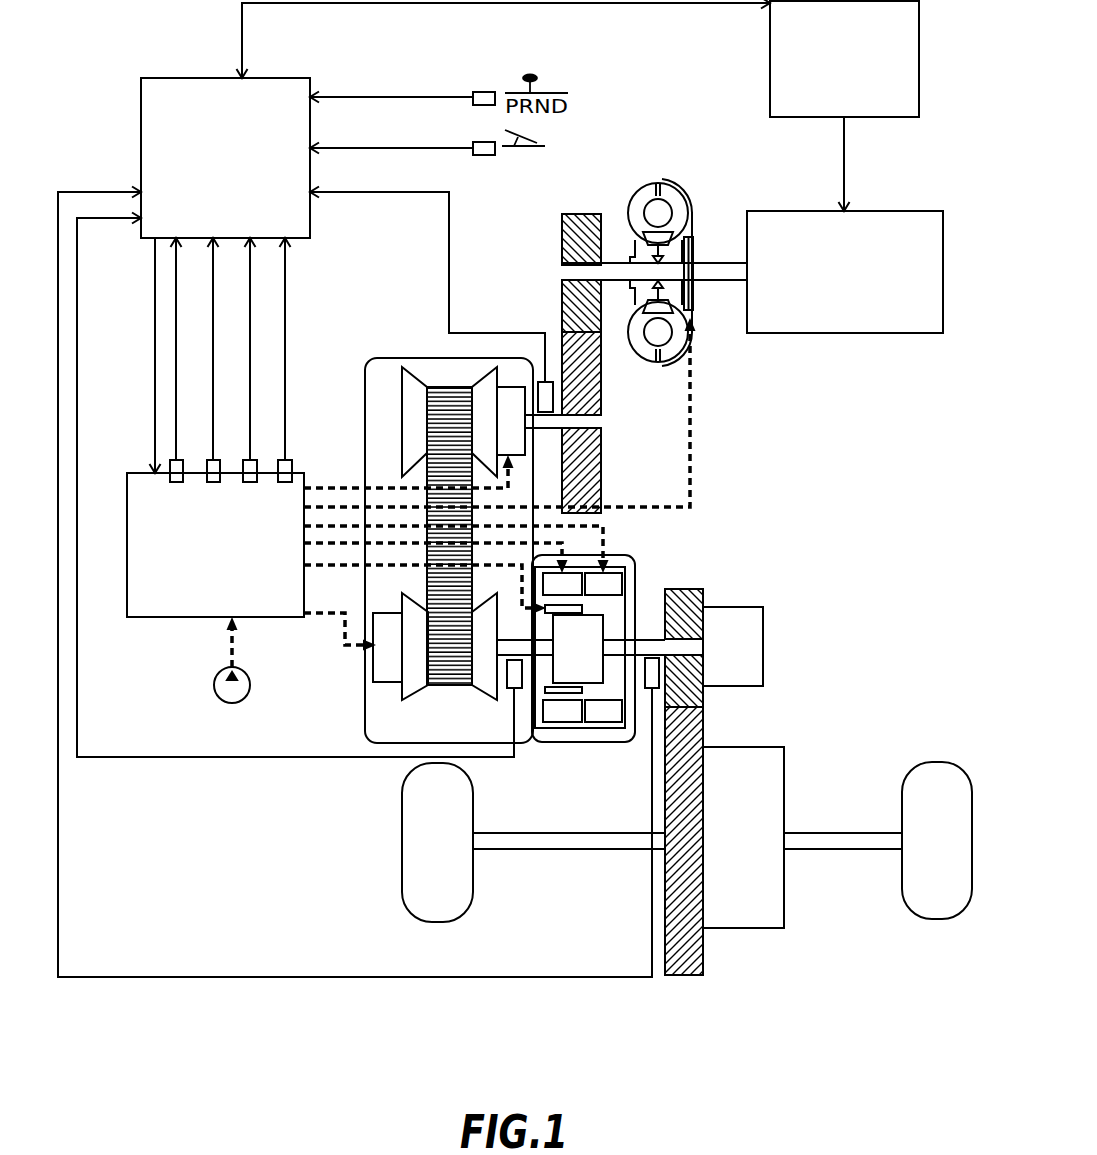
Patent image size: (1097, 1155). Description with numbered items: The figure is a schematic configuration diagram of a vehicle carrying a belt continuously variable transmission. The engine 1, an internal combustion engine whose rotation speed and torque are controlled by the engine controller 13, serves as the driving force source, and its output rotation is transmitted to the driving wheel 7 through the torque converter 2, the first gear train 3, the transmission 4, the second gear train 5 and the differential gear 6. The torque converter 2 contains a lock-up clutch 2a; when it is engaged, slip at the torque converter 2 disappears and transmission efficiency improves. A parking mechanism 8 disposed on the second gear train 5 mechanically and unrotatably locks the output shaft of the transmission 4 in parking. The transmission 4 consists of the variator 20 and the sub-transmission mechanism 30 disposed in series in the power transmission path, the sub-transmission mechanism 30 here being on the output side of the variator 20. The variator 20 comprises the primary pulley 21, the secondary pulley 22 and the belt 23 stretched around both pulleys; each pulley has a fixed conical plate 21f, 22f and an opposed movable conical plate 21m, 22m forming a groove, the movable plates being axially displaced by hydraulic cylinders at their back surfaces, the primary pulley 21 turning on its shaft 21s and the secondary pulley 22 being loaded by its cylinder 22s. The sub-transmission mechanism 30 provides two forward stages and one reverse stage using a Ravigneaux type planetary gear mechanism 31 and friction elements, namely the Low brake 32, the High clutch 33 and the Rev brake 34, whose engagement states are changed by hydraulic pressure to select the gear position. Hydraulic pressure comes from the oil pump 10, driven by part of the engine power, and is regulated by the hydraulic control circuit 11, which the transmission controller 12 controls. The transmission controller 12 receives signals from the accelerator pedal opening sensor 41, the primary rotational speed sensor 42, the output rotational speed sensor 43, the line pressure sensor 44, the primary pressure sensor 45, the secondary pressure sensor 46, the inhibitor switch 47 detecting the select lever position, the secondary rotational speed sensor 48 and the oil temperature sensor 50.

The engine 1 is at (928, 226).
The torque converter 2 is at (686, 269).
The lock-up clutch 2a is at (692, 303).
The first gear train 3 is at (582, 205).
The transmission 4 is at (476, 519).
The second gear train 5 is at (686, 983).
The differential gear 6 is at (743, 917).
The driving wheel 7 is at (936, 904).
The parking mechanism 8 is at (745, 637).
The oil pump 10 is at (213, 677).
The hydraulic control circuit 11 is at (150, 477).
The transmission controller 12 is at (295, 89).
The engine controller 13 is at (780, 100).
The variator 20 is at (476, 519).
The primary pulley 21 is at (490, 386).
The fixed conical plate 21f is at (415, 378).
The movable conical plate 21m is at (482, 377).
The primary shaft 21s is at (552, 432).
The secondary pulley 22 is at (393, 667).
The fixed conical plate 22f is at (487, 692).
The movable conical plate 22m is at (415, 693).
The secondary hydraulic cylinder 22s is at (377, 664).
The belt 23 is at (452, 387).
The sub-transmission mechanism 30 is at (636, 624).
The Ravigneaux type planetary gear mechanism 31 is at (583, 643).
The Low brake 32 is at (565, 585).
The High clutch 33 is at (562, 690).
The Rev brake 34 is at (605, 590).
The accelerator pedal opening sensor 41 is at (485, 157).
The primary rotational speed sensor 42 is at (544, 396).
The output rotational speed sensor 43 is at (652, 672).
The line pressure sensor 44 is at (178, 470).
The primary pressure sensor 45 is at (214, 470).
The secondary pressure sensor 46 is at (250, 470).
The inhibitor switch 47 is at (487, 93).
The secondary rotational speed sensor 48 is at (513, 677).
The oil temperature sensor 50 is at (286, 470).